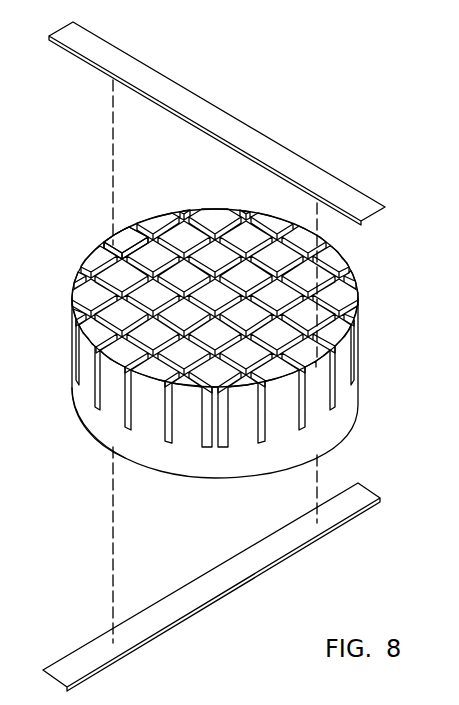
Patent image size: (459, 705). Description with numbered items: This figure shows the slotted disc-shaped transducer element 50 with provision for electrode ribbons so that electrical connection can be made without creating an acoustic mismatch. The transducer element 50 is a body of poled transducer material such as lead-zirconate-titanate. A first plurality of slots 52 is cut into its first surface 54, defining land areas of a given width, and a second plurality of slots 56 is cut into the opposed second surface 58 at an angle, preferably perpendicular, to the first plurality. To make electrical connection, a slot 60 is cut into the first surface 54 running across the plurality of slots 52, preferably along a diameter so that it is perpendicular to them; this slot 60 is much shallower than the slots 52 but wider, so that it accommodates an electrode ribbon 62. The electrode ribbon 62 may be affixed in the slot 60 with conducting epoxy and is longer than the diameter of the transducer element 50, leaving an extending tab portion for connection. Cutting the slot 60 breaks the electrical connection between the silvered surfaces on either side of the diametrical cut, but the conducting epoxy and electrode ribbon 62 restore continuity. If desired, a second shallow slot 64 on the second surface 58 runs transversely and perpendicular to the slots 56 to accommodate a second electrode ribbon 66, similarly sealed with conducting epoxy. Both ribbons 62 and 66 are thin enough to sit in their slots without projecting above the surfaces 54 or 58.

The transducer element 50 is at (229, 350).
The first plurality of slots 52 is at (362, 308).
The first surface 54 is at (163, 222).
The second plurality of slots 56 is at (300, 470).
The second surface 58 is at (168, 470).
The slot 60 is at (122, 248).
The electrode ribbon 62 is at (273, 150).
The second shallow slot 64 is at (105, 444).
The electrode ribbon 66 is at (78, 655).